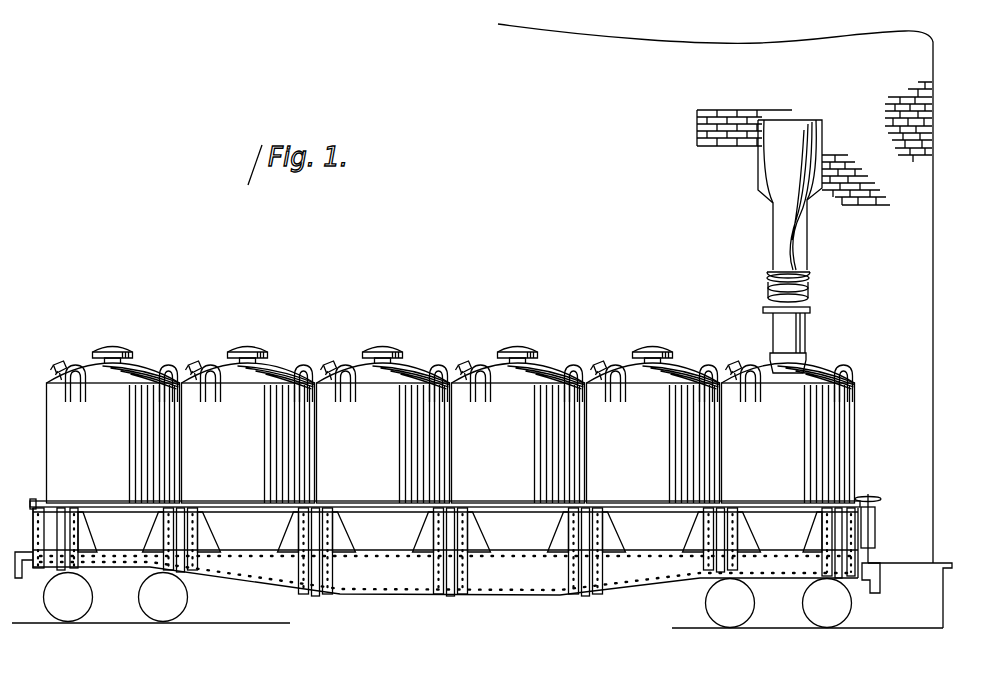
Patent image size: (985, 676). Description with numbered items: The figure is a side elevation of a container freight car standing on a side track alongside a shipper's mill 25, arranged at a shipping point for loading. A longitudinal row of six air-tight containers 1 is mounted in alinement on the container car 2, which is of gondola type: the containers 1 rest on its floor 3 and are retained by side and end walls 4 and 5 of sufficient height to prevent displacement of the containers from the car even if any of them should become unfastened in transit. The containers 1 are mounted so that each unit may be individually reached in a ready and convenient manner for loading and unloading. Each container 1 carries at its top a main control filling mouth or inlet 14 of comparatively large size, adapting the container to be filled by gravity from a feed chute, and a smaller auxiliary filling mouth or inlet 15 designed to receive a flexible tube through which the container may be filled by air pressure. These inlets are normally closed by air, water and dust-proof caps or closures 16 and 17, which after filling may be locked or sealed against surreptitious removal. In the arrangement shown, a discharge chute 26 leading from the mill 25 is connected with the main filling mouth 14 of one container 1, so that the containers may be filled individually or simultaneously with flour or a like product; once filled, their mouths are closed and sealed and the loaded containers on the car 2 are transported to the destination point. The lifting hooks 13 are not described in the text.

The container 1 is at (58, 433).
The container car 2 is at (30, 527).
The floor 3 is at (256, 552).
The side wall 4 is at (233, 508).
The end wall 5 is at (32, 506).
The lifting hook 13 is at (300, 367).
The main filling mouth 14 is at (268, 360).
The auxiliary filling mouth 15 is at (203, 366).
The cap 16 is at (249, 346).
The cap 17 is at (198, 366).
The shipper's mill 25 is at (925, 168).
The discharge chute 26 is at (795, 238).